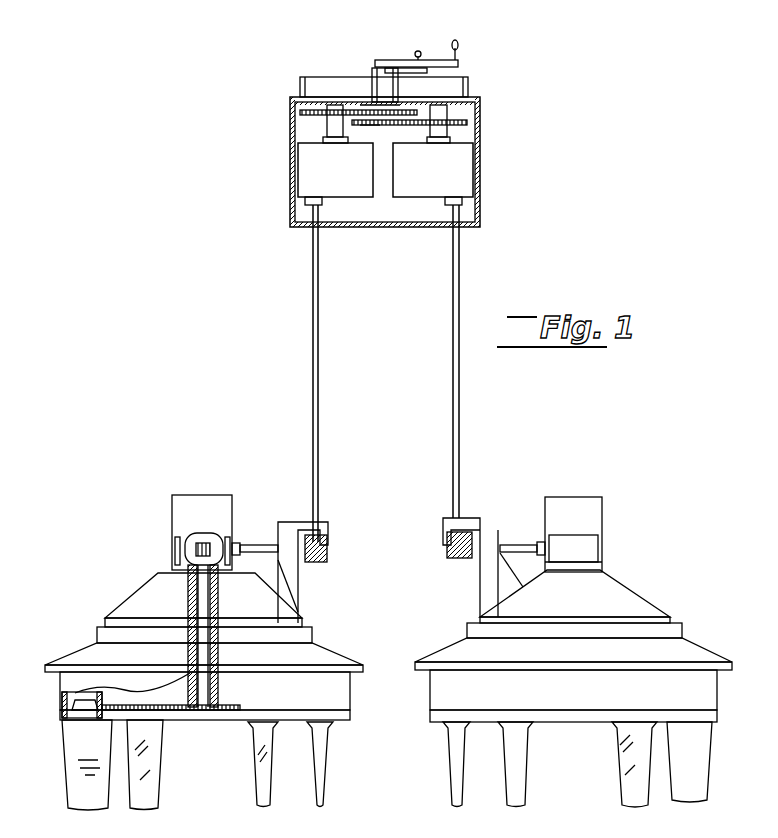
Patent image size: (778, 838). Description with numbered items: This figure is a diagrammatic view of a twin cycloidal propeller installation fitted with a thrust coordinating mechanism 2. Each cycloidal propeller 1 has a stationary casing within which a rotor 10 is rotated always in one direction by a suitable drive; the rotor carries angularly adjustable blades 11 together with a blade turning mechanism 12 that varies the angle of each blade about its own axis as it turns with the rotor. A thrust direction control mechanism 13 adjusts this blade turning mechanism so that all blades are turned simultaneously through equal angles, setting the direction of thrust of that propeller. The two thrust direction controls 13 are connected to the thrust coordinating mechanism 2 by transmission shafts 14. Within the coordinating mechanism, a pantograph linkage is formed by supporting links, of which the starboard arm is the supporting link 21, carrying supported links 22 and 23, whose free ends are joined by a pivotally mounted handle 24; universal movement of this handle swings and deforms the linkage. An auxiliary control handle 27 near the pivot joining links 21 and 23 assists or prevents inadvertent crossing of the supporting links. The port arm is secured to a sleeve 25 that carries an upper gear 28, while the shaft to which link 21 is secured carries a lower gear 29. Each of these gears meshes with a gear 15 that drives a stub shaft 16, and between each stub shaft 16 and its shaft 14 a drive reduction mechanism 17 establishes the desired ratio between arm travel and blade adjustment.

The cycloidal propeller 1 is at (133, 610).
The thrust coordinating mechanism 2 is at (290, 213).
The rotor 10 is at (62, 718).
The angularly adjustable blades 11 is at (75, 776).
The blade turning mechanism 12 is at (180, 712).
The thrust direction control mechanism 13 is at (258, 545).
The shaft 14 is at (313, 360).
The gear 15 is at (300, 113).
The stub shaft 16 is at (330, 129).
The drive reduction mechanism 17 is at (385, 174).
The supporting link 21 is at (395, 60).
The supported link 22 is at (462, 68).
The supported link 23 is at (440, 60).
The handle 24 is at (460, 45).
The sleeve 25 is at (372, 77).
The auxiliary control handle 27 is at (418, 50).
The upper gear 28 is at (370, 108).
The lower gear 29 is at (363, 126).